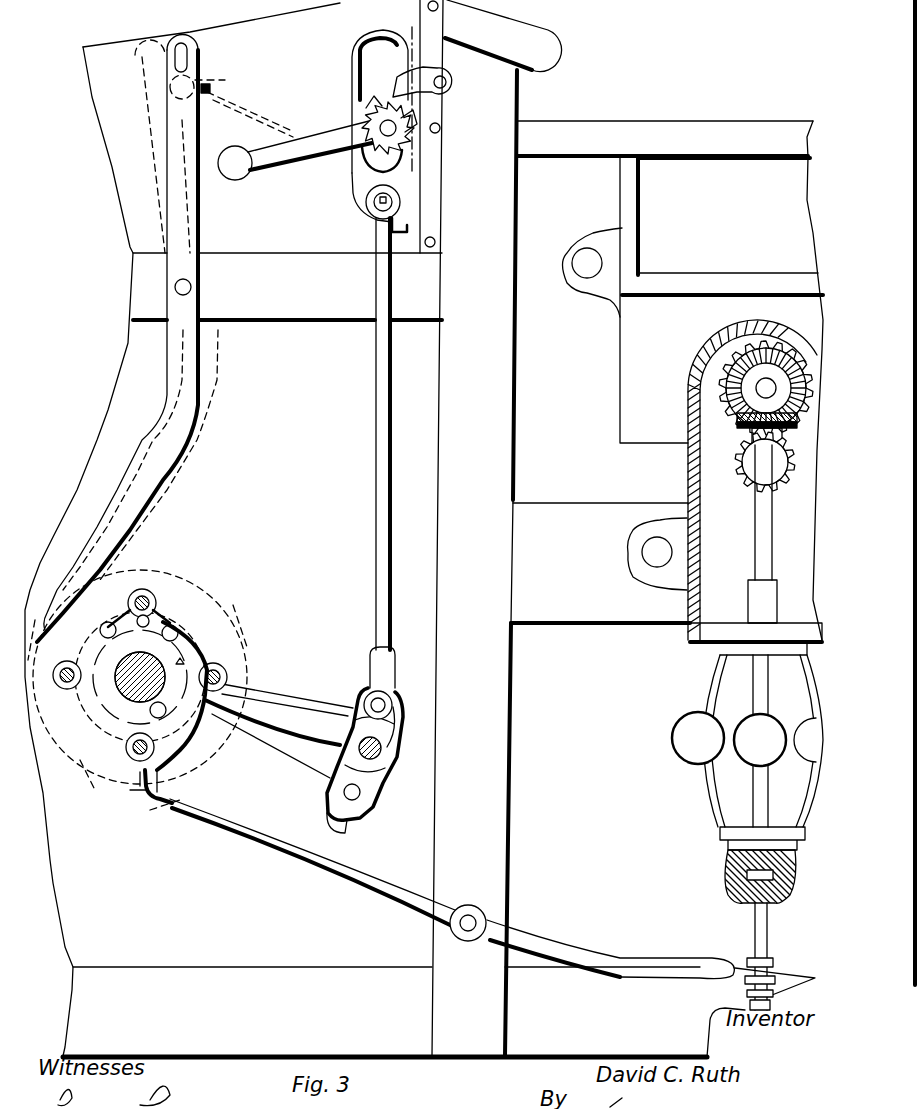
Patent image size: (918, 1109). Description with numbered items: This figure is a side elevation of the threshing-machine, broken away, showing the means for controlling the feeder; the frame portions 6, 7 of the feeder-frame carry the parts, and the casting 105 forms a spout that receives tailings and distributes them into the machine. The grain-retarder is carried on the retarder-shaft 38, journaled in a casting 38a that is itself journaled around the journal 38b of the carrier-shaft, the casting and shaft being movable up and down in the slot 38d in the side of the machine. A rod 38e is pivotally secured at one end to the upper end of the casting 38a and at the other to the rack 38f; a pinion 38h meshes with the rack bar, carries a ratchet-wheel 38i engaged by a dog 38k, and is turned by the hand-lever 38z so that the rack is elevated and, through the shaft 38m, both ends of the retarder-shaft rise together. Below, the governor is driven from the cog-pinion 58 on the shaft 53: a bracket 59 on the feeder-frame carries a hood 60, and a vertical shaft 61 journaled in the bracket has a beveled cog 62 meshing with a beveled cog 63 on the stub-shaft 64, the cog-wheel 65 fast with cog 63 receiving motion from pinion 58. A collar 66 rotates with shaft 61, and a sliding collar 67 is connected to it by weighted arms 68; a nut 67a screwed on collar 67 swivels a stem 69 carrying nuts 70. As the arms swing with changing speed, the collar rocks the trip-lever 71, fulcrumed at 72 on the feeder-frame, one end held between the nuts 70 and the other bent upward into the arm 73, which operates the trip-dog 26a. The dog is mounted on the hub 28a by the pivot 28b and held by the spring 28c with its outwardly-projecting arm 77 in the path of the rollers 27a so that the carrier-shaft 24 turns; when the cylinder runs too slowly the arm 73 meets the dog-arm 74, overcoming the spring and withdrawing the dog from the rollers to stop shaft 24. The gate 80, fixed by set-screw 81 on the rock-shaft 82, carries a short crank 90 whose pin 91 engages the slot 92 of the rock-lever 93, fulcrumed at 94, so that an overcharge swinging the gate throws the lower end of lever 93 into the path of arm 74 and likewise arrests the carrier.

The base 6 is at (404, 1002).
The top bar 7 is at (527, 8).
The casting 105 is at (722, 226).
The carrier-shaft 24 is at (140, 665).
The trip-dog 26a is at (200, 755).
The rollers 27a is at (112, 750).
The hub 28a is at (226, 627).
The pivot 28b is at (165, 710).
The spring 28c is at (175, 627).
The retarder-shaft 38 is at (379, 760).
The casting 38a is at (330, 770).
The journal of the carrier-shaft 38b is at (130, 695).
The slot 38d is at (392, 672).
The rod 38e is at (376, 522).
The rack 38f is at (352, 190).
The pinion 38h is at (405, 133).
The ratchet-wheel 38i is at (368, 108).
The dog 38k is at (447, 80).
The shaft 38m is at (362, 128).
The hand lever 38z is at (270, 167).
The shaft 53 is at (775, 470).
The cog-pinion 58 is at (770, 465).
The bracket 59 is at (700, 633).
The hood 60 is at (688, 462).
The vertical shaft 61 is at (731, 548).
The beveled cog 62 is at (740, 423).
The beveled cog 63 is at (727, 377).
The stub-shaft 64 is at (760, 383).
The cog-wheel 65 is at (727, 368).
The collar 66 is at (718, 650).
The sliding collar 67 is at (718, 835).
The nut 67a is at (730, 880).
The weighted arms 68 is at (680, 750).
The stem 69 is at (775, 956).
The nuts 70 is at (651, 958).
The trip-lever 71 is at (378, 890).
The fulcrum 72 is at (487, 917).
The upwardly-projecting arm 73 is at (140, 788).
The dog-arm 74 is at (160, 776).
The outwardly-projecting arm 77 is at (292, 712).
The gate 80 is at (238, 78).
The set-screw 81 is at (250, 90).
The rock-shaft 82 is at (225, 74).
The short crank 90 is at (200, 60).
The pin 91 is at (181, 43).
The slot 92 is at (163, 72).
The rock-lever 93 is at (178, 263).
The fulcrum 94 is at (178, 292).